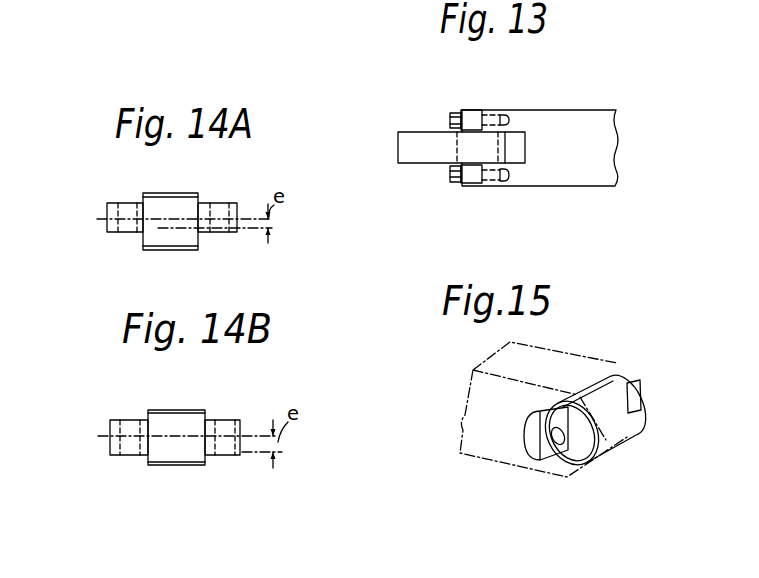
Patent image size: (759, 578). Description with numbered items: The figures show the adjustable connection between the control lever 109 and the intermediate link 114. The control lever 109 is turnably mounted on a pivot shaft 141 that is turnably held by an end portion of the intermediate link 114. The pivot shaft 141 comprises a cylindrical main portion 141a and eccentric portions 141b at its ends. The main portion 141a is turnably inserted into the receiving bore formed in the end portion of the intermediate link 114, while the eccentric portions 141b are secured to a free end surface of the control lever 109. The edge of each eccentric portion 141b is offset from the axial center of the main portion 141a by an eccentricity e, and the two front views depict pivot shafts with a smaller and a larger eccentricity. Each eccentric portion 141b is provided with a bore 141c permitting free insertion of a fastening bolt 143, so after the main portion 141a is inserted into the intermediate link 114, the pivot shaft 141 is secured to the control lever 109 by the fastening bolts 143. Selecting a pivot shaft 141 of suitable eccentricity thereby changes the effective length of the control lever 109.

In FIG. 13, the control lever 109 is at (580, 113).
In FIG. 13, the intermediate link 114 is at (413, 140).
In FIG. 15, the intermediate link 114 is at (477, 442).
In FIG. 13, the pivot shaft 141 is at (462, 110).
In FIG. 14A, the pivot shaft 141 is at (169, 218).
In FIG. 14B, the pivot shaft 141 is at (171, 437).
In FIG. 15, the pivot shaft 141 is at (590, 423).
In FIG. 14A, the cylindrical main portion 141a is at (172, 250).
In FIG. 14B, the cylindrical main portion 141a is at (172, 466).
In FIG. 15, the cylindrical main portion 141a is at (607, 428).
In FIG. 14A, the eccentric portions 141b is at (110, 232).
In FIG. 14B, the eccentric portions 141b is at (113, 455).
In FIG. 15, the eccentric portions 141b is at (535, 461).
In FIG. 14A, the bore 141c is at (130, 203).
In FIG. 14B, the bore 141c is at (129, 420).
In FIG. 13, the fastening bolt 143 is at (451, 113).